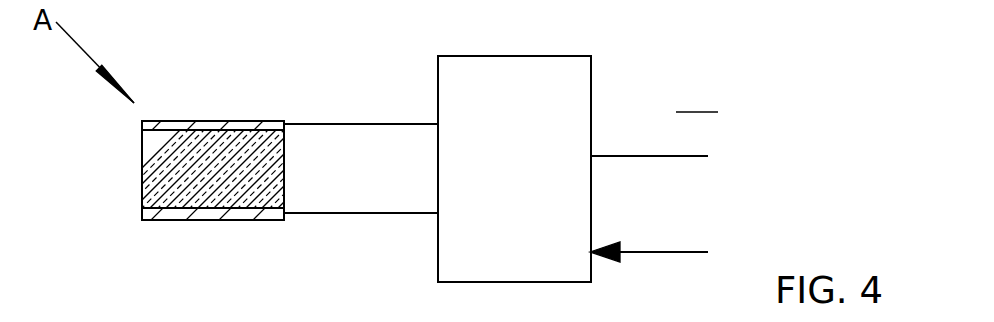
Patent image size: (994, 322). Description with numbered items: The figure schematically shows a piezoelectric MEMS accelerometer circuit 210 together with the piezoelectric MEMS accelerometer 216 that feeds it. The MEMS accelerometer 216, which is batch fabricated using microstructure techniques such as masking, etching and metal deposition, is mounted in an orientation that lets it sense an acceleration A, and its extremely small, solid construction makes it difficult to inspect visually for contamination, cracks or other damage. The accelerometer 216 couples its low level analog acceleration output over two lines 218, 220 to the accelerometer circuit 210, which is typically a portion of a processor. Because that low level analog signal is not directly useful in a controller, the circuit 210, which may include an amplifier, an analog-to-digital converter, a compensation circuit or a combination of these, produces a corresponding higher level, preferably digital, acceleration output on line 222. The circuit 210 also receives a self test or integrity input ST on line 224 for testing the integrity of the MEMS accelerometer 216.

The piezoelectric MEMS accelerometer circuit 210 is at (541, 193).
The piezoelectric MEMS accelerometer 216 is at (249, 122).
The line 218 is at (389, 123).
The line 220 is at (408, 214).
The line 222 is at (615, 157).
The line 224 is at (625, 255).